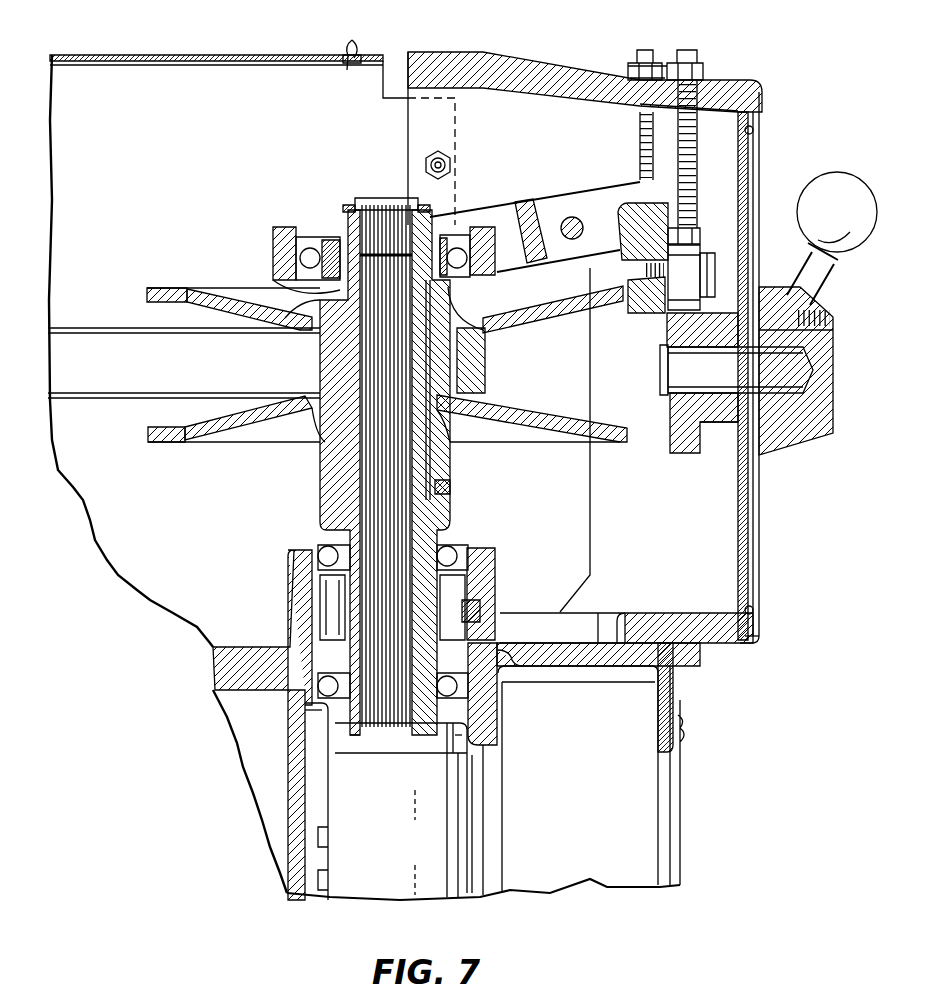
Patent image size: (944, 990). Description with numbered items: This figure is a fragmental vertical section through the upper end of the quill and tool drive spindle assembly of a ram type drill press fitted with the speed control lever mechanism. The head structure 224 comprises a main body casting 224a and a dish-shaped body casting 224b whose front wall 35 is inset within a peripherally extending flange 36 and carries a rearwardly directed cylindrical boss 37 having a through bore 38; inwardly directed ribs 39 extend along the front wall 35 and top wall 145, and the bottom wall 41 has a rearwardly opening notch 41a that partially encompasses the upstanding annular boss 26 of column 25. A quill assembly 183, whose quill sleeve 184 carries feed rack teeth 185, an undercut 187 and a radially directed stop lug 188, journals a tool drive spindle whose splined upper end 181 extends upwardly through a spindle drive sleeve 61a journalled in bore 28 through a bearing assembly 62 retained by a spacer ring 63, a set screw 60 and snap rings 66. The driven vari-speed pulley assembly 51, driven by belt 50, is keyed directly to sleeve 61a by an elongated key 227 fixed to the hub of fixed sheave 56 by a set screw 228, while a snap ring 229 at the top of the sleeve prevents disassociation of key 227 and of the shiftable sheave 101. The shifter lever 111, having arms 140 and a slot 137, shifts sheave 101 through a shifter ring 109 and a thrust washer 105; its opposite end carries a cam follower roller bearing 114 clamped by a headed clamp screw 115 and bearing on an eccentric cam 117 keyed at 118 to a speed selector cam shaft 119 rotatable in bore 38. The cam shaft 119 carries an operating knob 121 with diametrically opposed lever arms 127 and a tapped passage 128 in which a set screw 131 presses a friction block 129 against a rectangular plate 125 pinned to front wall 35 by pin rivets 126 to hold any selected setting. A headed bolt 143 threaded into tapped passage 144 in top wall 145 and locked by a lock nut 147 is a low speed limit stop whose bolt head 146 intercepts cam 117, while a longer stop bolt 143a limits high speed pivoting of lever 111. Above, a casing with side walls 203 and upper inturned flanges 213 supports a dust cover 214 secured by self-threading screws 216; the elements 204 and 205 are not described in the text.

The dust cover 214 is at (216, 55).
The upper inturned flanges 213 is at (167, 66).
The self-threading screws 216 is at (352, 40).
The side walls 203 is at (227, 134).
The top wall 145 is at (440, 52).
The tapped through passage 144 is at (712, 80).
The hidden opening 204 is at (460, 132).
The nut 205 is at (423, 153).
The ribs 39 is at (490, 176).
The front wall 35 is at (744, 543).
The rectangular plate 125 is at (760, 165).
The pin rivets 126 is at (753, 130).
The peripherally extending flange 36 is at (762, 632).
The bottom wall 41 is at (700, 645).
The rearwardly opening notch 41a is at (620, 613).
The dish-shaped body casting 224b is at (750, 643).
The column 25 is at (498, 728).
The through bore 28 is at (482, 695).
The quill assembly 183 is at (478, 862).
The head structure 224 is at (680, 690).
The main body casting 224a is at (690, 812).
The spacer ring 63 is at (290, 592).
The undercut 187 is at (325, 775).
The stop lug 188 is at (305, 745).
The feed rack teeth 185 is at (318, 843).
The snap rings 66 is at (318, 540).
The annular boss 26 is at (490, 548).
The set screw 60 is at (482, 615).
The slot 137 is at (390, 198).
The snap ring 229 is at (343, 208).
The splined upper end 181 is at (345, 445).
The shifter ring 109 is at (273, 235).
The thrust washer 105 is at (290, 285).
The driven vari-speed pulley assembly 51 is at (195, 288).
The V-belt 50 is at (110, 330).
The fixed sheave 56 is at (548, 412).
The elongated key 227 is at (486, 352).
The set screw 228 is at (451, 488).
The shifter lever 111 is at (595, 185).
The shifter lever arms 140 is at (508, 200).
The shiftable sheave 101 is at (583, 305).
The headed bolt 143 is at (688, 50).
The headed stop bolt 143a is at (645, 50).
The lock nut 147 is at (640, 66).
The bolt head 146 is at (703, 228).
The cam follower roller bearing 114 is at (692, 283).
The headed clamp screw 115 is at (710, 260).
The through bore 38 is at (738, 345).
The speed selector cam shaft 119 is at (742, 374).
The key 118 is at (660, 360).
The eccentric cam 117 is at (670, 448).
The cylindrical boss 37 is at (715, 422).
The friction block 129 is at (762, 287).
The cam shaft operating knob 121 is at (782, 290).
The set screw 131 is at (835, 312).
The tapped passage 128 is at (833, 325).
The lever arms 127 is at (842, 192).
The quill sleeve 184 is at (402, 849).
The spindle drive sleeve 61a is at (356, 735).
The bearing assembly 62 is at (458, 712).